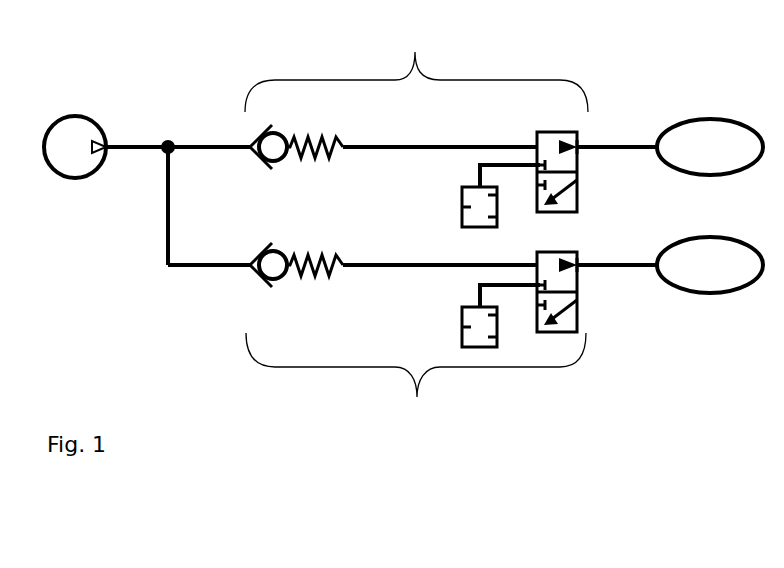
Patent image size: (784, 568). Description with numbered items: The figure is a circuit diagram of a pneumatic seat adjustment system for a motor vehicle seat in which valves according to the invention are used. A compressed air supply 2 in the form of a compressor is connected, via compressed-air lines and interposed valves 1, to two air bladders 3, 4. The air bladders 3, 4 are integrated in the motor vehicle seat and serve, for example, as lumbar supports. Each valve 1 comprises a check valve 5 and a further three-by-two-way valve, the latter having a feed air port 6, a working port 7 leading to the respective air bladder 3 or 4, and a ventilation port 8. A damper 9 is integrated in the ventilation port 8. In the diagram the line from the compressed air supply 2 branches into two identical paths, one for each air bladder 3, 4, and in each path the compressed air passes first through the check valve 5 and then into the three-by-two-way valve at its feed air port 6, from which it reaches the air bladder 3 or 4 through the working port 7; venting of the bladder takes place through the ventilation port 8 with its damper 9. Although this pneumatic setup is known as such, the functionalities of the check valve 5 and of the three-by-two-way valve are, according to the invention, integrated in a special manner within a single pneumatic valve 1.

The valve 1 is at (416, 225).
The compressed air supply 2 is at (80, 116).
The air bladder 3 is at (710, 118).
The air bladder 4 is at (712, 237).
The check valve 5 is at (313, 165).
The feed air port 6 is at (554, 148).
The working port 7 is at (580, 133).
The ventilation port 8 is at (531, 172).
The damper 9 is at (462, 207).